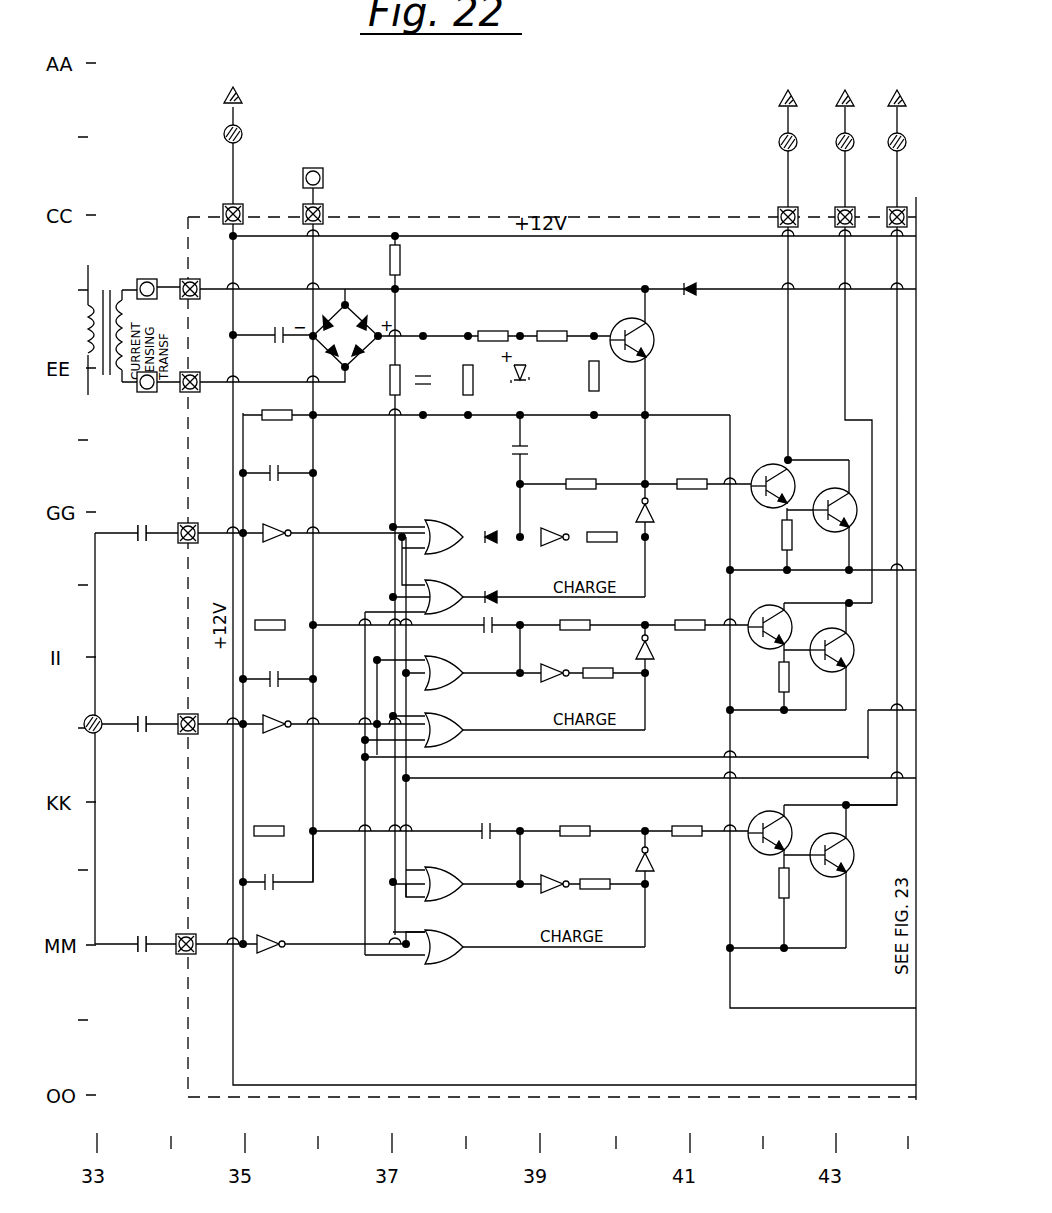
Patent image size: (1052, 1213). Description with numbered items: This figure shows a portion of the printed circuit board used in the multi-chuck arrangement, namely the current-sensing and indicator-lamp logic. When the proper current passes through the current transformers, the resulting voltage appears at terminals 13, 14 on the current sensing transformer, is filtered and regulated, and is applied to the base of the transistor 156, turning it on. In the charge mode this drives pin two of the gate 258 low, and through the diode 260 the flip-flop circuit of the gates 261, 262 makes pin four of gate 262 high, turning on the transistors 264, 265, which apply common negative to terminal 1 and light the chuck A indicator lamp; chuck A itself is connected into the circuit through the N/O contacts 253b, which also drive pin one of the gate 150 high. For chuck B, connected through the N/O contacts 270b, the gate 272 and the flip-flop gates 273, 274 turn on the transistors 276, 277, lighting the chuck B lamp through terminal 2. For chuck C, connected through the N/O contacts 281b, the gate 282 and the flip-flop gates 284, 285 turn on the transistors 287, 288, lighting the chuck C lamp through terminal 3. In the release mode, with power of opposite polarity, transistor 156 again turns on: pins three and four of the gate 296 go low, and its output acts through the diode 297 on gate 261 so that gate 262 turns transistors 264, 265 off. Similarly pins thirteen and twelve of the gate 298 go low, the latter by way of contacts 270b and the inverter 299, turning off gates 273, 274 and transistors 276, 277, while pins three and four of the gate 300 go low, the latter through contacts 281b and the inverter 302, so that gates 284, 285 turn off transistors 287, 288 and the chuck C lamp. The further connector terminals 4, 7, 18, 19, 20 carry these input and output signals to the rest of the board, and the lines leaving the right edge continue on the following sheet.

The terminal 1 is at (781, 141).
The terminal 2 is at (837, 141).
The terminal 3 is at (889, 141).
The connector terminal 4 is at (322, 178).
The indicator lamp 7 is at (172, 428).
The terminal 13 is at (148, 276).
The terminal 14 is at (146, 394).
The connector terminal 18 is at (189, 546).
The connector terminal 19 is at (195, 735).
The connector terminal 20 is at (196, 955).
The gate 150 is at (278, 540).
The transistor 156 is at (654, 349).
The N/O contacts 253b is at (137, 526).
The gate 258 is at (470, 583).
The diode 260 is at (495, 595).
The gate 261 is at (550, 526).
The gate 262 is at (656, 512).
The transistor 264 is at (766, 466).
The transistor 265 is at (845, 480).
The N/O contacts 270b is at (136, 728).
The gate 272 is at (450, 748).
The gate 273 is at (550, 682).
The gate 274 is at (656, 650).
The transistor 276 is at (764, 602).
The transistor 277 is at (848, 648).
The N/O contacts 281b is at (136, 948).
The gate 282 is at (454, 958).
The gate 284 is at (548, 893).
The gate 285 is at (656, 862).
The transistor 287 is at (756, 818).
The transistor 288 is at (846, 850).
The gate 296 is at (438, 520).
The diode 297 is at (490, 532).
The gate 298 is at (454, 668).
The inverter 299 is at (278, 732).
The gate 300 is at (448, 892).
The inverter 302 is at (272, 952).